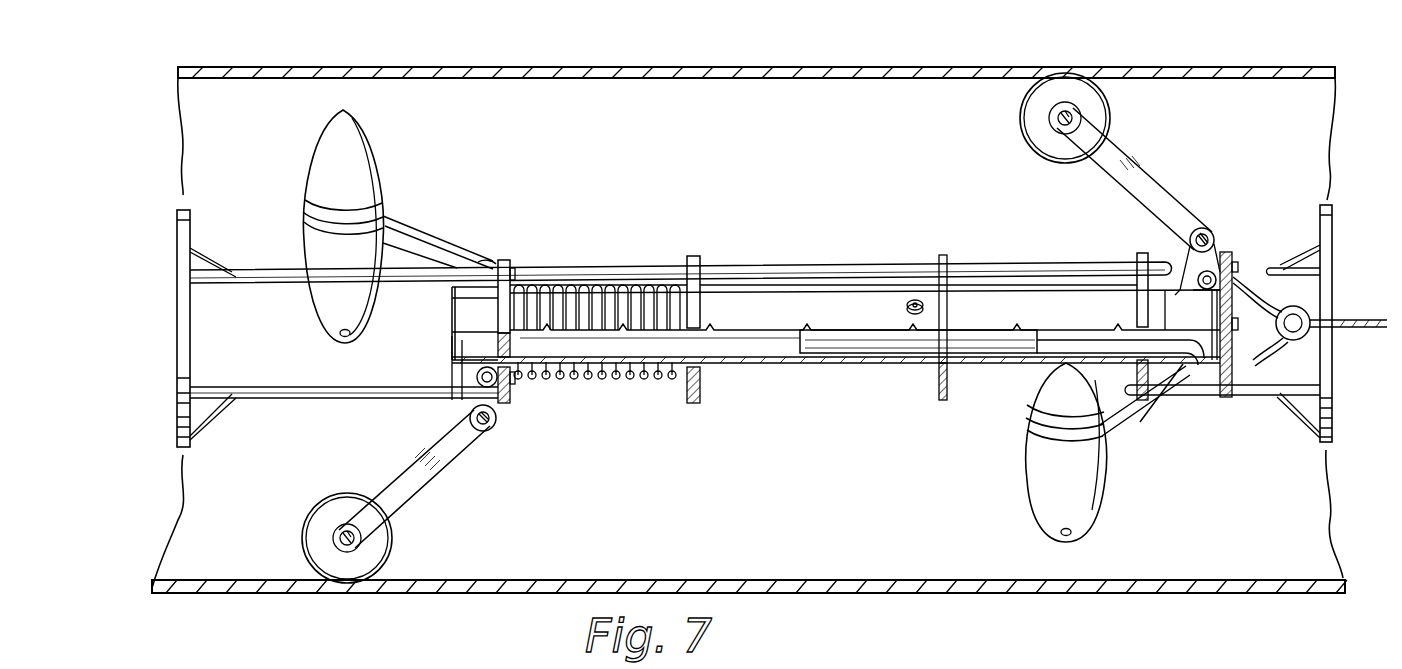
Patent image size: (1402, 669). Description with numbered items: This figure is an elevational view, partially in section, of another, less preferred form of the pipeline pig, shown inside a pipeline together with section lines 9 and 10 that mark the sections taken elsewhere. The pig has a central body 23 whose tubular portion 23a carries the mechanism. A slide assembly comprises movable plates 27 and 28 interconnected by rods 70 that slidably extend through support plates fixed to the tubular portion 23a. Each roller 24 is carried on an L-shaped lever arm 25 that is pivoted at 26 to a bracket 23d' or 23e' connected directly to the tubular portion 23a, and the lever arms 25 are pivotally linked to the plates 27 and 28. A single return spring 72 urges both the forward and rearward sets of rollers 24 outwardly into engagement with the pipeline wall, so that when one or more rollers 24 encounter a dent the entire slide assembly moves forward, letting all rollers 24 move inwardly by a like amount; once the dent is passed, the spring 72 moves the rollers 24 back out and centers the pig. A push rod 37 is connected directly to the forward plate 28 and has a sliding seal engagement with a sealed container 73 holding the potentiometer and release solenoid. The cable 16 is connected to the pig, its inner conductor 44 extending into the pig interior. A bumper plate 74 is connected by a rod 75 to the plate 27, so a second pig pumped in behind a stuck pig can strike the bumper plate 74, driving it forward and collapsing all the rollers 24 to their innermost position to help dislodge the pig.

The section line 9- 9 is at (1272, 622).
The section line 10- 10 is at (432, 630).
The cable 16 is at (1345, 320).
The central body 23 is at (730, 295).
The tubular portion 23a is at (812, 318).
The brackets 23d' is at (437, 343).
The rear rail 23e' is at (1222, 417).
The rollers 24 is at (395, 542).
The lever arm 25 is at (430, 232).
The pivot 26 is at (496, 426).
The plate 27 is at (502, 258).
The plate 28 is at (1225, 258).
The push rod 37 is at (1092, 330).
The conductor 44 is at (1338, 334).
The rods 70 is at (793, 268).
The return spring 72 is at (593, 285).
The sealed container 73 is at (850, 345).
The bumper plate 74 is at (185, 231).
The rod 75 is at (277, 392).